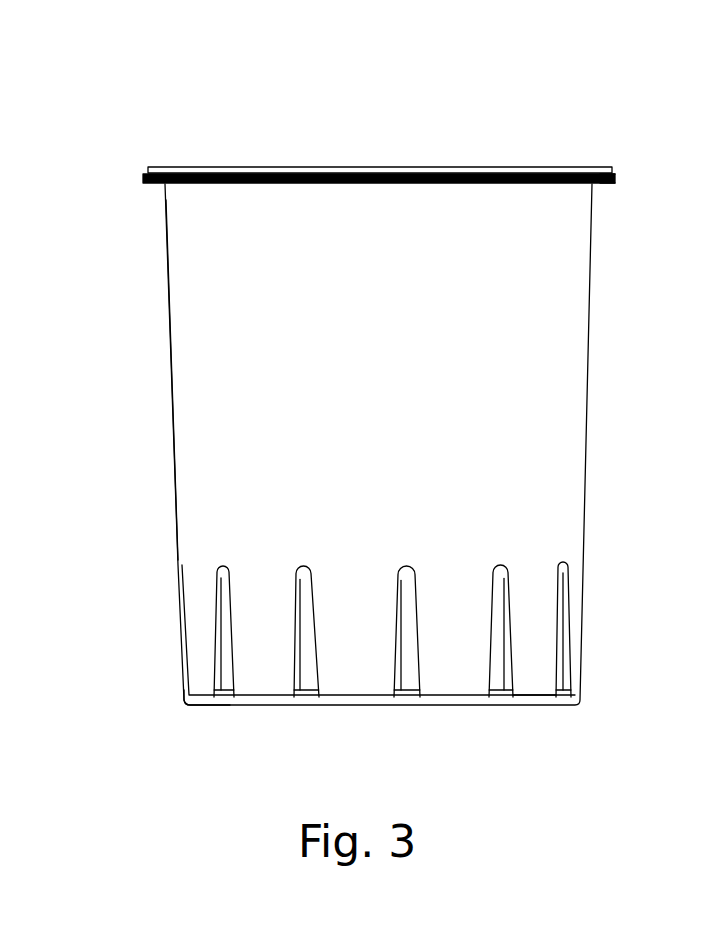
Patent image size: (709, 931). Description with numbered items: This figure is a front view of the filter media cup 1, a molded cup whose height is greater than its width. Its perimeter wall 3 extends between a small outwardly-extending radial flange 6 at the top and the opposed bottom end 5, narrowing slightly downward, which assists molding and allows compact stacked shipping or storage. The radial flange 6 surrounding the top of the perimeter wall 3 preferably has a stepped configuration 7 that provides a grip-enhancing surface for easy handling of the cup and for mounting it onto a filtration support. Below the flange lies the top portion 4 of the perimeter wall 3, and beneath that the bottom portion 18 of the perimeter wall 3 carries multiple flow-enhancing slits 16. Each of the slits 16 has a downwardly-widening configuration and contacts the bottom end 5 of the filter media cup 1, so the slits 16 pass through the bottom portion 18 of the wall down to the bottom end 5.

The filter media cup 1 is at (116, 71).
The perimeter wall 3 is at (165, 466).
The top portion of perimeter wall 4 is at (158, 260).
The bottom end 5 is at (188, 717).
The radial flange 6 is at (607, 188).
The stepped configuration 7 is at (562, 158).
The slits 16 is at (408, 580).
The bottom portion of perimeter wall 18 is at (530, 613).